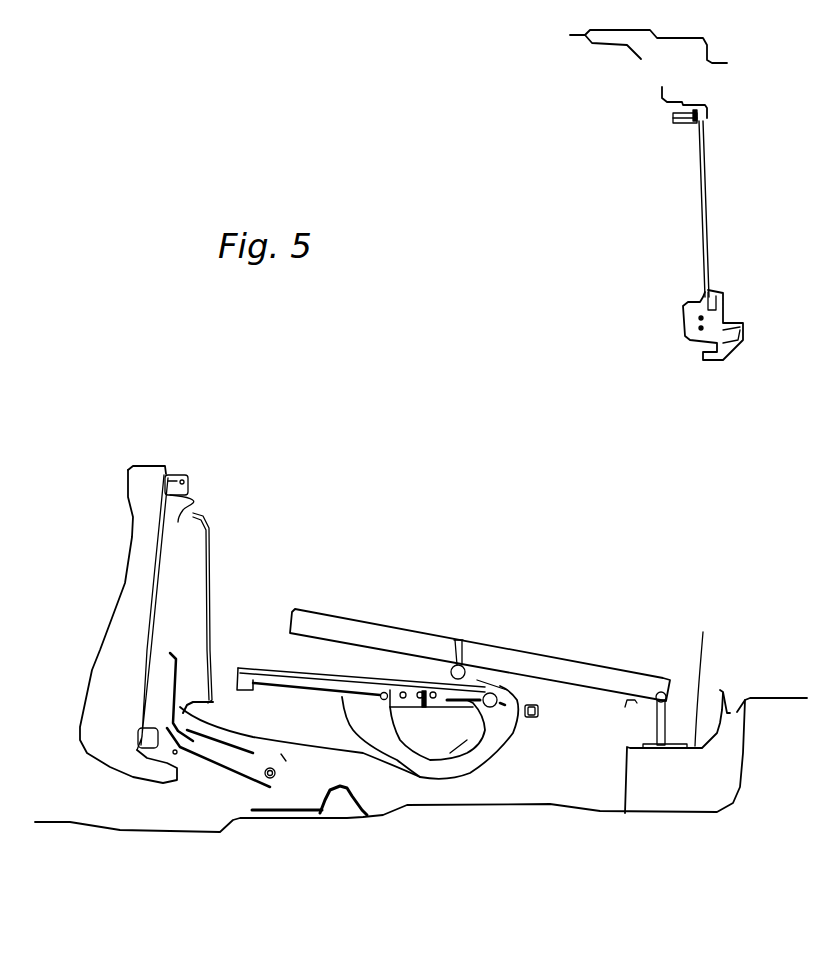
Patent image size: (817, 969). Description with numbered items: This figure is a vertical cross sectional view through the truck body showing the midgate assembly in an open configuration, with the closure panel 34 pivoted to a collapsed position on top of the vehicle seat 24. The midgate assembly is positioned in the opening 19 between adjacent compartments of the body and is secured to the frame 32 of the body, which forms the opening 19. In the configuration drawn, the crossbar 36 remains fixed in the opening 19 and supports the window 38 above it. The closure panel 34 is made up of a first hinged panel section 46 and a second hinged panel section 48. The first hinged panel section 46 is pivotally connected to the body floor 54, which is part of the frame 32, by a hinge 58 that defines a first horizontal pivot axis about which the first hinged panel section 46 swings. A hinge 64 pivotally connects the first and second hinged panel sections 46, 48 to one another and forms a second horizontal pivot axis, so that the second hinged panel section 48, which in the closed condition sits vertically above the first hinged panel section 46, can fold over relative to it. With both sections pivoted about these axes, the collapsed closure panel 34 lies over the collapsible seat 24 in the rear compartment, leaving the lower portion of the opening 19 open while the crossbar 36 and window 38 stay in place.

The opening 19 is at (675, 127).
The frame 32 is at (675, 110).
The window 38 is at (713, 210).
The crossbar 36 is at (683, 322).
The seat 24 is at (262, 645).
The first hinged panel section 46 is at (553, 653).
The second hinged panel section 48 is at (338, 610).
The closure panel 34 is at (416, 615).
The hinge 64 is at (468, 628).
The hinge 58 is at (665, 713).
The body floor 54 is at (697, 745).